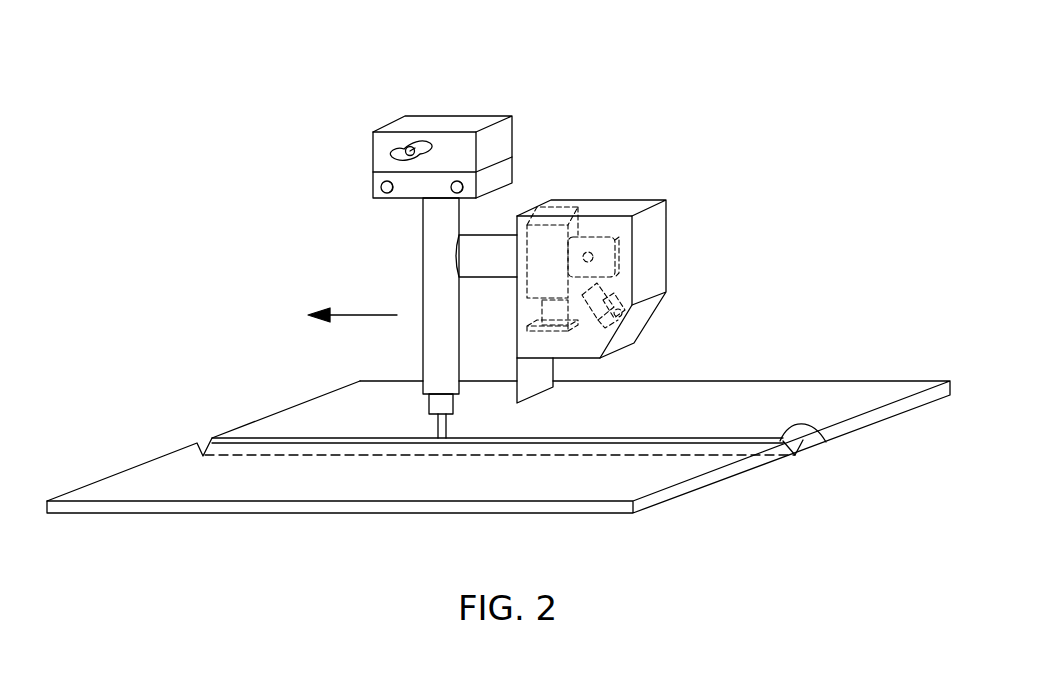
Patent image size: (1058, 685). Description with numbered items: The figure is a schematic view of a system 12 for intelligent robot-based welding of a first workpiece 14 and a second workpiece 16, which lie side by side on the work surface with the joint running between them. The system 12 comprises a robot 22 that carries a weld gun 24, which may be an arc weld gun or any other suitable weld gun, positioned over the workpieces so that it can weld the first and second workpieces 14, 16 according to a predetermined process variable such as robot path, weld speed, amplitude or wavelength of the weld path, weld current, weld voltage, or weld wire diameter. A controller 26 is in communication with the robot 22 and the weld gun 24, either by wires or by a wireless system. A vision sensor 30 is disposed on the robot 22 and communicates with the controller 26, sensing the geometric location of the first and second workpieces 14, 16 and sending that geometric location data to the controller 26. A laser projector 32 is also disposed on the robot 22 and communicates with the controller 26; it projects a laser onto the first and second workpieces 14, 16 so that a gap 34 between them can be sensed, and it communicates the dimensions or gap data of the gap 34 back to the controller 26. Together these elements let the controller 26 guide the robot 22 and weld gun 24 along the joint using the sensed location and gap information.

The system 12 is at (352, 85).
The first workpiece 14 is at (173, 470).
The second workpiece 16 is at (270, 428).
The robot 22 is at (488, 278).
The weld gun 24 is at (433, 258).
The controller 26 is at (634, 202).
The vision sensor 30 is at (550, 250).
The laser projector 32 is at (627, 324).
The gap 34 is at (826, 442).